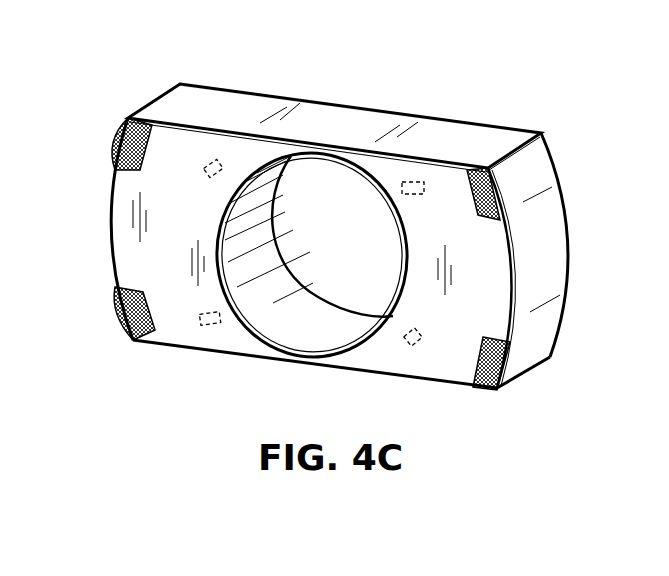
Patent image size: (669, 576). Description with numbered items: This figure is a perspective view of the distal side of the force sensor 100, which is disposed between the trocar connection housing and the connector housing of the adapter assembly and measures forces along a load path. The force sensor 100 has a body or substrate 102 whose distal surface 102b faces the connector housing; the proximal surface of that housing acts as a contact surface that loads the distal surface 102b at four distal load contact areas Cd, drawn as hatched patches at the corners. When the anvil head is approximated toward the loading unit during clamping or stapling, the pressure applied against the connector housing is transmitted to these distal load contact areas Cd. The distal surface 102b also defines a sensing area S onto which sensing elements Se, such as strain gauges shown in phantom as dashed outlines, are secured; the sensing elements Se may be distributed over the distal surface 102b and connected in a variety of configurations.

The force sensor 100 is at (167, 82).
The substrate 102 is at (326, 95).
The distal surface 102b is at (407, 170).
The sensing area S is at (487, 288).
The distal load contact areas Cd is at (474, 373).
The sensing elements Se is at (202, 312).